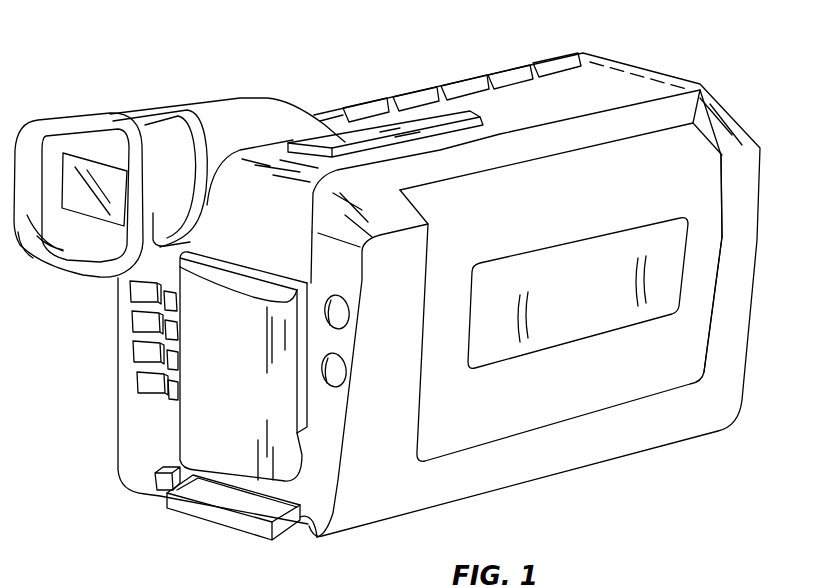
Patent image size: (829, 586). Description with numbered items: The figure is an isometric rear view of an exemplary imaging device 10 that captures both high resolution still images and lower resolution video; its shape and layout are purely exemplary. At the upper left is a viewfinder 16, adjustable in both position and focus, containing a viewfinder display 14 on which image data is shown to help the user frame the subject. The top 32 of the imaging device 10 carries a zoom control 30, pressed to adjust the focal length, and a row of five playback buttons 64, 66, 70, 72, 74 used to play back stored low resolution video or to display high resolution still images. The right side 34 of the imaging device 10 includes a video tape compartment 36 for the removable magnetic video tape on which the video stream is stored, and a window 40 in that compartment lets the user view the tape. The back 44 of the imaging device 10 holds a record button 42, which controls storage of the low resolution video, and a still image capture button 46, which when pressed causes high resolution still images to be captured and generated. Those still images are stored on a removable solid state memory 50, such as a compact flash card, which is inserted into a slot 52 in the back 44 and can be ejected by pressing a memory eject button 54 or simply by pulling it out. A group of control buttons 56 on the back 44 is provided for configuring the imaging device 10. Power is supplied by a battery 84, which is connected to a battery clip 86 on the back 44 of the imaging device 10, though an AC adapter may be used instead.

The imaging device 10 is at (708, 33).
The viewfinder display 14 is at (77, 157).
The viewfinder 16 is at (123, 112).
The zoom control 30 is at (474, 113).
The top 32 is at (590, 106).
The right side 34 is at (395, 466).
The video tape compartment 36 is at (722, 240).
The window 40 is at (598, 304).
The record button 42 is at (347, 373).
The back 44 is at (288, 251).
The still image capture button 46 is at (350, 313).
The solid state memory 50 is at (213, 523).
The slot 52 is at (303, 537).
The memory eject button 54 is at (163, 492).
The control buttons 56 is at (147, 410).
The playback button 64 is at (364, 103).
The playback button 66 is at (410, 95).
The playback button 70 is at (457, 86).
The playback button 72 is at (503, 76).
The playback button 74 is at (547, 62).
The battery 84 is at (243, 341).
The battery clip 86 is at (224, 262).